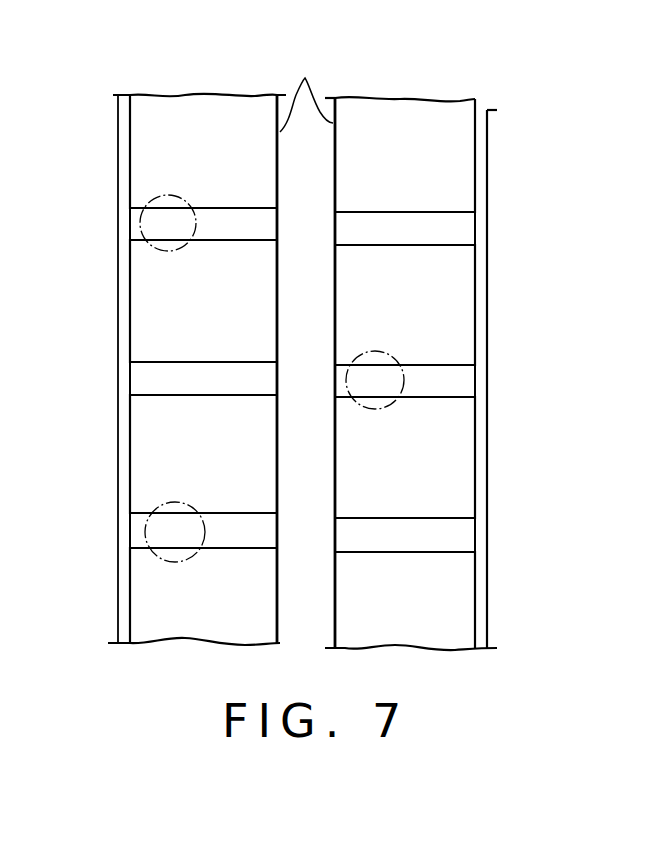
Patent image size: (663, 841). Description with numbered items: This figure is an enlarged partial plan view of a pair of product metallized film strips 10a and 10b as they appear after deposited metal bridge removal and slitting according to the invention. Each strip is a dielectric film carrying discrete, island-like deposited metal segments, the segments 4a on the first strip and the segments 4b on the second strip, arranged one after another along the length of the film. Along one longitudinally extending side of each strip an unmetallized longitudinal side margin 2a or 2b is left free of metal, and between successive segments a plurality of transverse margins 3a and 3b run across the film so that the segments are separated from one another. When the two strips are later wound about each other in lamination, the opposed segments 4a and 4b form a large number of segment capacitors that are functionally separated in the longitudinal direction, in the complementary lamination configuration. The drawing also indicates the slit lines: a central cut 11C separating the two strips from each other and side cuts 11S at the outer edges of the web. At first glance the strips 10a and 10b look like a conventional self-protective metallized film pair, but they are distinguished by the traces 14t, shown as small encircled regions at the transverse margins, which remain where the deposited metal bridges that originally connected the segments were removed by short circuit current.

The metallized film strip 10a is at (178, 93).
The metallized film strip 10b is at (395, 96).
The center cut line 11C is at (308, 89).
The side cut line 11S is at (117, 132).
The longitudinal side margin 2a is at (117, 190).
The longitudinal side margin 2b is at (487, 198).
The transverse margin 3a is at (257, 239).
The transverse margin 3b is at (428, 243).
The deposited metal segment 4a is at (218, 163).
The deposited metal segment 4b is at (421, 168).
The trace 14t is at (140, 225).